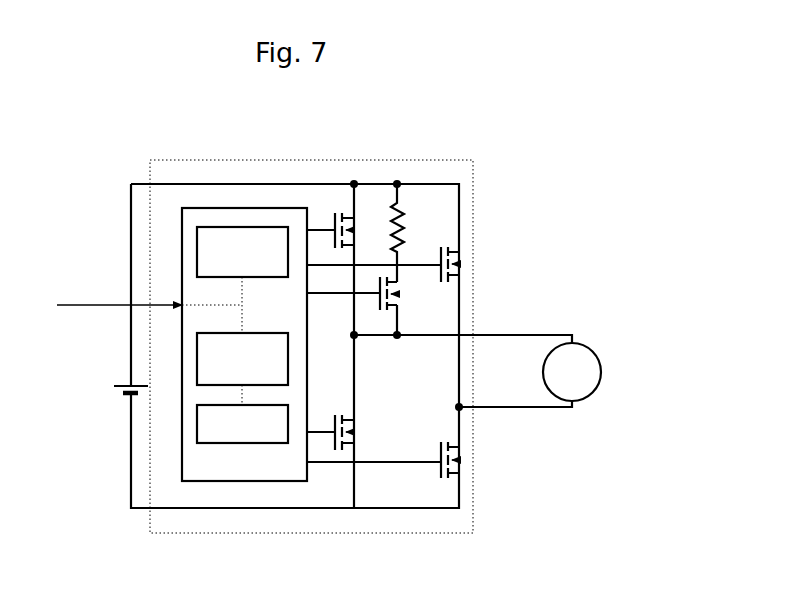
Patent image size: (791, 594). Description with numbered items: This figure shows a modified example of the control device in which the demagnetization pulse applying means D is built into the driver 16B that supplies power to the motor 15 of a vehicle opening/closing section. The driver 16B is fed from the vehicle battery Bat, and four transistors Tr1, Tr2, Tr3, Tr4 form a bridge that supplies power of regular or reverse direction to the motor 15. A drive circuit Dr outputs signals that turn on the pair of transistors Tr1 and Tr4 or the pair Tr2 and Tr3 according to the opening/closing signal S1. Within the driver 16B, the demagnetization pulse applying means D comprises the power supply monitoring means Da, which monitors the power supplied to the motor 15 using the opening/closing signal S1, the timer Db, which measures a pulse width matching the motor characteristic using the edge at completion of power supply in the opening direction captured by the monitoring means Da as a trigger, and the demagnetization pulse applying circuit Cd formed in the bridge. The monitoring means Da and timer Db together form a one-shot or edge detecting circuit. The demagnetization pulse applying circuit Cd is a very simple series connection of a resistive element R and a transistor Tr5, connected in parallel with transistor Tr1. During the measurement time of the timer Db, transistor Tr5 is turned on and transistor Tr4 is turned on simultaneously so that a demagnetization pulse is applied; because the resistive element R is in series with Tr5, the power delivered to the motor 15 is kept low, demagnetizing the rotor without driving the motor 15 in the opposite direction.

The motor 15 is at (585, 347).
The driver 16B is at (473, 205).
The battery Bat is at (125, 384).
The opening/closing signal S1 is at (119, 291).
The demagnetization pulse applying means D is at (96, 421).
The power supply monitoring means Da is at (197, 365).
The timer Db is at (197, 427).
The transistor Tr1 is at (334, 215).
The transistor Tr2 is at (458, 264).
The transistor Tr3 is at (335, 450).
The transistor Tr4 is at (450, 455).
The transistor Tr5 is at (390, 276).
The resistive element R is at (400, 228).
The demagnetization pulse applying circuit Cd is at (492, 125).
The drive circuit Dr is at (324, 105).